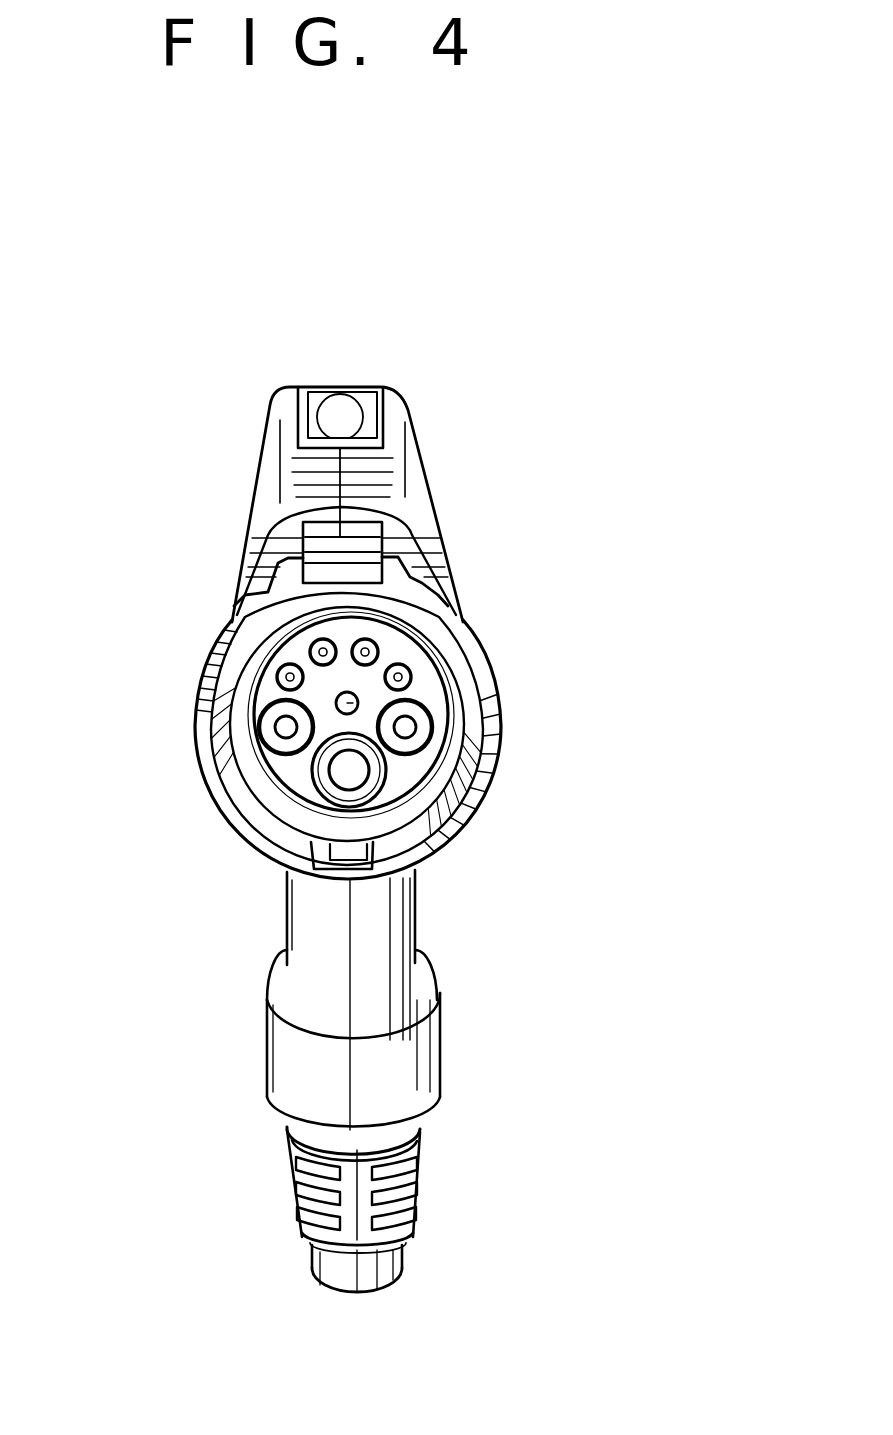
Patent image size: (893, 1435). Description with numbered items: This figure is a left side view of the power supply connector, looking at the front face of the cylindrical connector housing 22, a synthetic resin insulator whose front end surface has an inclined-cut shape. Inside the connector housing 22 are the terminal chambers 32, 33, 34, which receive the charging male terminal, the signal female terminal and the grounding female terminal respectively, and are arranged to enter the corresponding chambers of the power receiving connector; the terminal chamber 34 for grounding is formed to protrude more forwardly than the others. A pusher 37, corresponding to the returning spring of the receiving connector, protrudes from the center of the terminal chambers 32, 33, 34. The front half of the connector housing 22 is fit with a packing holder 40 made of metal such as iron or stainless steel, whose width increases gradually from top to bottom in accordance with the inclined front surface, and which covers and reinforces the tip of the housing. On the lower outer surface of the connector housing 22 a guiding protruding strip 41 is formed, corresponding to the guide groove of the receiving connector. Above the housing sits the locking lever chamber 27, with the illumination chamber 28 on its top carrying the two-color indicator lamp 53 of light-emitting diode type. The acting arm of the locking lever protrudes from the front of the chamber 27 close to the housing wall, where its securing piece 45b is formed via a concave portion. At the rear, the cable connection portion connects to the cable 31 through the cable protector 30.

The two-color indicator lamp 53 is at (347, 405).
The illumination chamber 28 is at (367, 417).
The locking lever chamber 27 is at (428, 478).
The securing piece 45b is at (368, 572).
The pusher 37 is at (357, 698).
The terminal chamber 33 is at (273, 683).
The terminal chamber 32 is at (268, 735).
The terminal chamber 34 is at (310, 772).
The connector housing 22 is at (284, 753).
The packing holder 40 is at (277, 827).
The guiding protruding strip 41 is at (353, 855).
The cable protector 30 is at (418, 1163).
The cable 31 is at (403, 1260).